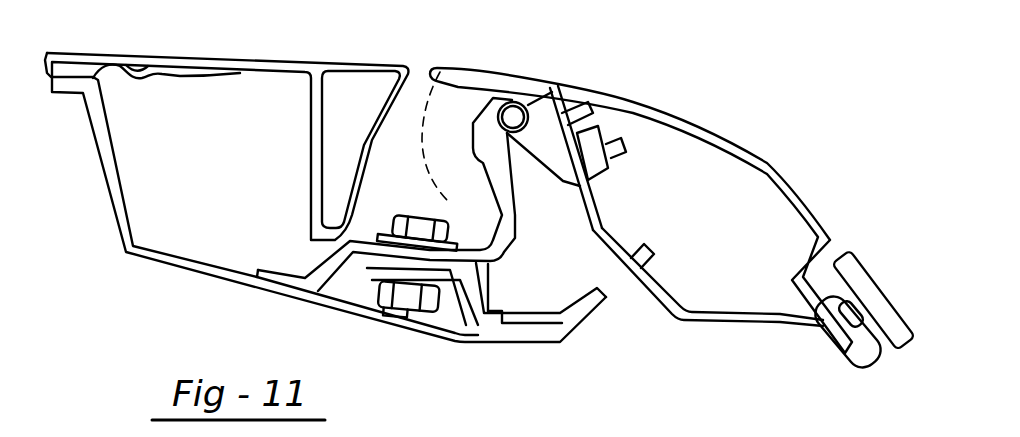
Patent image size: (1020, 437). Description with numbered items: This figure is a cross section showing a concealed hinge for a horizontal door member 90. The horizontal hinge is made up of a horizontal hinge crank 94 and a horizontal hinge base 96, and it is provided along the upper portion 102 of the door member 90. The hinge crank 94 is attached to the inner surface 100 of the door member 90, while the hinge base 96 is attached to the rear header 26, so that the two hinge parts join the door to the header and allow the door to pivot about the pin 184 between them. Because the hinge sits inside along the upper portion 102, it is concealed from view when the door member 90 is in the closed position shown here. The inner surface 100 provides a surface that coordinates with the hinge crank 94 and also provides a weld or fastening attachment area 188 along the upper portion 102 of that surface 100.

The rear header 26 is at (362, 238).
The door member 90 is at (805, 205).
The horizontal hinge crank 94 is at (542, 122).
The horizontal hinge base 96 is at (512, 248).
The inner surface 100 is at (578, 214).
The upper portion 102 is at (636, 288).
The pivot pin 184 is at (476, 124).
The weld or fastening attachment area 188 is at (597, 187).